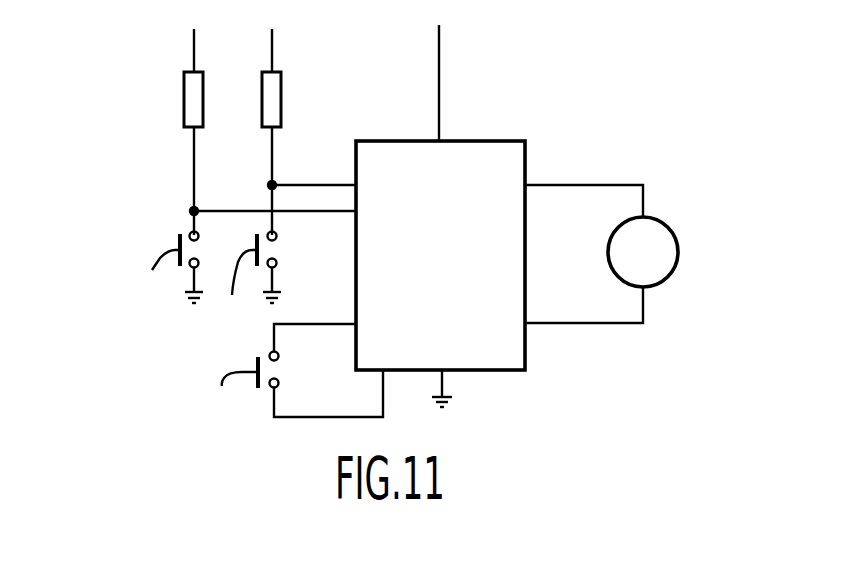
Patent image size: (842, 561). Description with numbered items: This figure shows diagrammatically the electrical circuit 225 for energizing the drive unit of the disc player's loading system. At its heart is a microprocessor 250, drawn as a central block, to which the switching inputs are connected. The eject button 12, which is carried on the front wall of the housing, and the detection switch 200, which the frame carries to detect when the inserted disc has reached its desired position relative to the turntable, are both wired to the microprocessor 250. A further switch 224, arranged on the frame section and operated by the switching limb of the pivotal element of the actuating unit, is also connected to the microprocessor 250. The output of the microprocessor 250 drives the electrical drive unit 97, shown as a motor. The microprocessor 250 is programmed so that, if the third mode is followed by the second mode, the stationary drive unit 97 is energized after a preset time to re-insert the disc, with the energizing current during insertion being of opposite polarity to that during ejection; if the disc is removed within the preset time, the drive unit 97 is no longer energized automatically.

The detection switch 200 is at (147, 268).
The eject button 12 is at (249, 283).
The switch 224 is at (290, 372).
The microprocessor 250 is at (510, 370).
The electrical drive unit 97 is at (672, 268).
The electrical circuit 225 is at (625, 132).